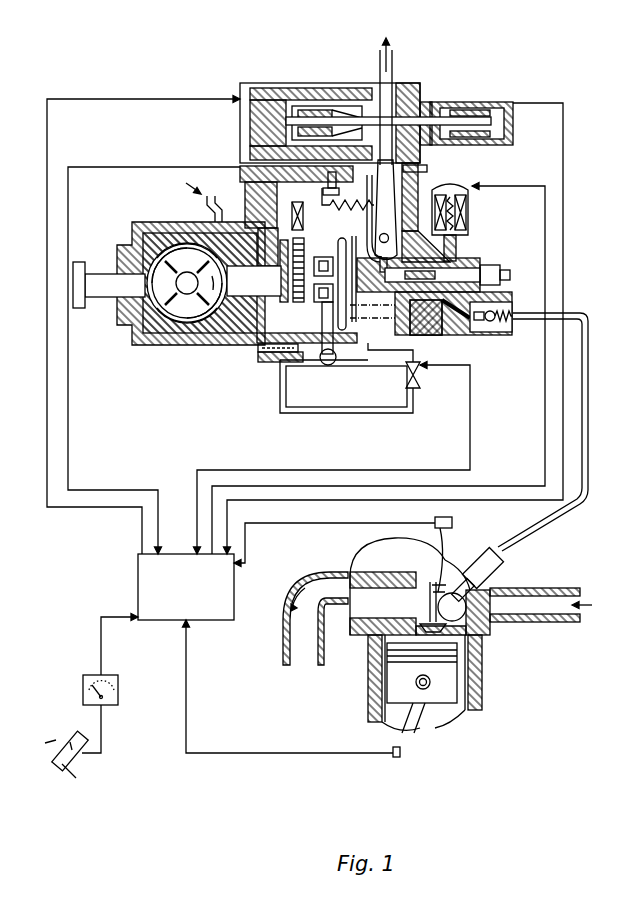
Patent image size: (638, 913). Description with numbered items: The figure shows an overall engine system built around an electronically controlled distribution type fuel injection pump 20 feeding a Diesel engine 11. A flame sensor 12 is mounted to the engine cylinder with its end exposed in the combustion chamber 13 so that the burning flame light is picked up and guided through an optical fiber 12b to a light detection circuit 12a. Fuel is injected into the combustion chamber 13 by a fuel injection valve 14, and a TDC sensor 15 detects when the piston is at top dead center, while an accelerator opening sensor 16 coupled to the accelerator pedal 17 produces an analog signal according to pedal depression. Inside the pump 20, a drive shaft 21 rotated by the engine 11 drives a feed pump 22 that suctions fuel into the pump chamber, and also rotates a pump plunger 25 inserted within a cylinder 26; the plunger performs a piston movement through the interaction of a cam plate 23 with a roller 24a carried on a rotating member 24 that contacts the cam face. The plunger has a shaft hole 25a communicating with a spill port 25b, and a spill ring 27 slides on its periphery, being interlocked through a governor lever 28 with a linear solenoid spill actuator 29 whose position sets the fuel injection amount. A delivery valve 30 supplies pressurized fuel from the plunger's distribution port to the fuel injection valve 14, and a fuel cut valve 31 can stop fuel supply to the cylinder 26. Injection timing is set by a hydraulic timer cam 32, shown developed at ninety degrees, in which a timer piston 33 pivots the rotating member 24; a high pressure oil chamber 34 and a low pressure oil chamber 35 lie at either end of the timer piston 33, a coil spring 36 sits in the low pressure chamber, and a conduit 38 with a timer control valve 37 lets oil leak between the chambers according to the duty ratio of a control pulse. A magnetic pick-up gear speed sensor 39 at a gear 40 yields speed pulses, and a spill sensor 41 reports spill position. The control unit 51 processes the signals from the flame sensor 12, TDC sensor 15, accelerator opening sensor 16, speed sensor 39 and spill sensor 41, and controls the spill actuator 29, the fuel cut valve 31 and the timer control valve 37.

The Diesel engine 11 is at (496, 683).
The flame sensor 12 is at (461, 524).
The light detection circuit 12a is at (453, 521).
The optical fiber 12b is at (440, 528).
The combustion chamber 13 is at (482, 637).
The fuel injection valve 14 is at (472, 556).
The TDC sensor 15 is at (398, 758).
The accelerator opening sensor 16 is at (118, 696).
The accelerator pedal 17 is at (80, 763).
The fuel injection pump 20 is at (452, 38).
The drive shaft 21 is at (100, 298).
The feed pump 22 is at (226, 318).
The cam plate 23 is at (345, 332).
The rotating member 24 is at (272, 318).
The roller 24a is at (323, 304).
The pump plunger 25 is at (458, 336).
The shaft hole 25a is at (446, 340).
The spill port 25b is at (436, 336).
The cylinder 26 is at (478, 262).
The spill ring 27 is at (363, 216).
The governor lever 28 is at (347, 185).
The spill actuator 29 is at (286, 82).
The delivery valve 30 is at (502, 301).
The fuel cut valve 31 is at (448, 182).
The timer cam 32 is at (392, 400).
The timer piston 33 is at (368, 346).
The high pressure oil chamber 34 is at (409, 352).
The low pressure oil chamber 35 is at (290, 364).
The coil spring 36 is at (262, 354).
The timer control valve 37 is at (418, 380).
The conduit 38 is at (353, 414).
The gear speed sensor 39 is at (304, 214).
The gear 40 is at (306, 262).
The spill sensor 41 is at (462, 100).
The control unit 51 is at (235, 589).